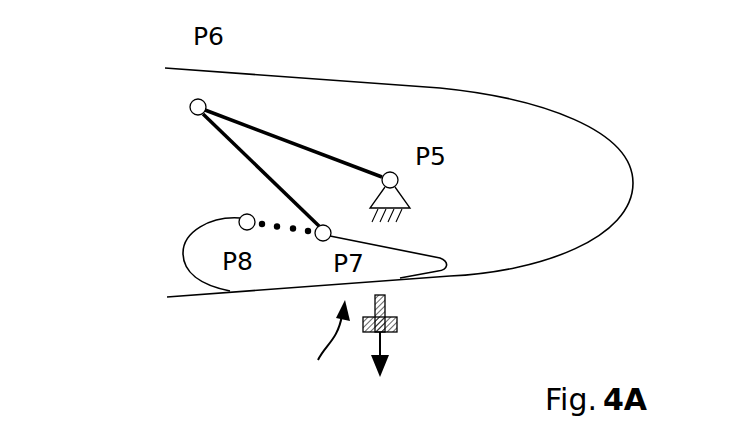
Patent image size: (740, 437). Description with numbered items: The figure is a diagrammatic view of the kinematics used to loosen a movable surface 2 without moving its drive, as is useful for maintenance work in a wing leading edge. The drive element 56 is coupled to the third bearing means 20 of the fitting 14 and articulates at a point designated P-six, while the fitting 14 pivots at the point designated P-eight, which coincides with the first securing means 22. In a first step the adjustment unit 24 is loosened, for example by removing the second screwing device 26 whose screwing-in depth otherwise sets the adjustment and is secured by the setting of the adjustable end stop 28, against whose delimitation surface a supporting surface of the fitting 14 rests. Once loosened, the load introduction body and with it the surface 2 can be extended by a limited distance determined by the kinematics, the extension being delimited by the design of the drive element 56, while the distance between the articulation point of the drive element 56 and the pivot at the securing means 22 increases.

The surface 2 is at (423, 268).
The fitting 14 is at (277, 222).
The third bearing means 20 is at (331, 226).
The first securing means 22 is at (239, 216).
The adjustment unit 24 is at (326, 350).
The second screwing device 26 is at (397, 328).
The adjustable end stop 28 is at (310, 282).
The drive element 56 is at (316, 118).